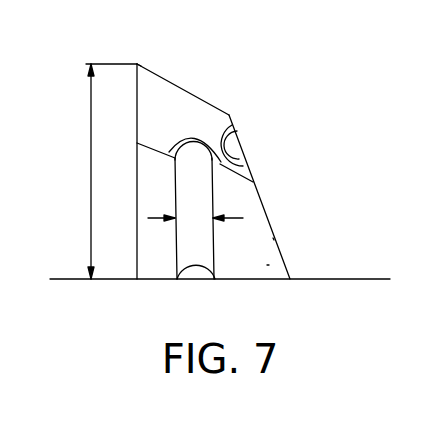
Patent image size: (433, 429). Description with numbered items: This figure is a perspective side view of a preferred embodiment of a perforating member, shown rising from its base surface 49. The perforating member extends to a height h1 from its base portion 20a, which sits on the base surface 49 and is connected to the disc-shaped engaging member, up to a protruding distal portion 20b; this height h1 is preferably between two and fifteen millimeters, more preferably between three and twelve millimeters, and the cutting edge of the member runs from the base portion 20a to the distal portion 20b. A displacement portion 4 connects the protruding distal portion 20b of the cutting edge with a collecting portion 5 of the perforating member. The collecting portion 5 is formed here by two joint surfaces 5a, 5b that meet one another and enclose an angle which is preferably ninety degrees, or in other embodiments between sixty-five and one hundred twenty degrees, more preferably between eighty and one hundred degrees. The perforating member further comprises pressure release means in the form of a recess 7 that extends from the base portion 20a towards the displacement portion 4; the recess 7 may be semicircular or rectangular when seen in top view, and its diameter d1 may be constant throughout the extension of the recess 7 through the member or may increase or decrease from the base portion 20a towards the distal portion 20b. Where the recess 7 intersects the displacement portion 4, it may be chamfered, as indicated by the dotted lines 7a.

The displacement portion 4 is at (178, 98).
The distal portion 20b is at (137, 64).
The base portion 20a is at (158, 282).
The collecting portion 5 is at (262, 203).
The joint surface 5a is at (267, 265).
The joint surface 5b is at (273, 238).
The recess 7 is at (192, 158).
The dotted lines 7a is at (171, 151).
The base surface 49 is at (308, 280).
The height h1 is at (107, 171).
The diameter d1 is at (195, 218).